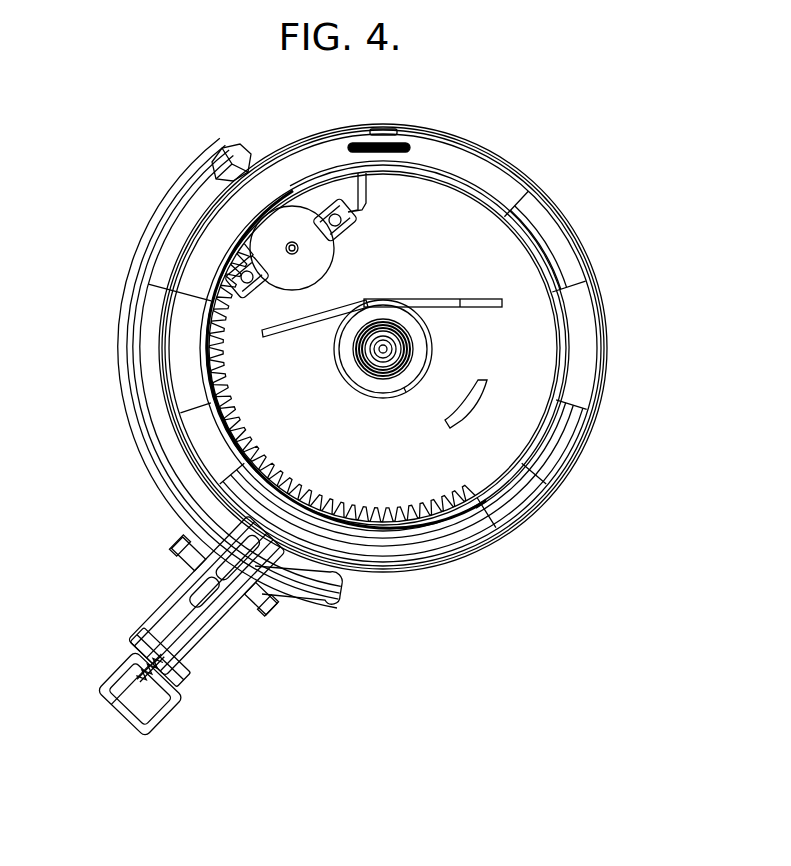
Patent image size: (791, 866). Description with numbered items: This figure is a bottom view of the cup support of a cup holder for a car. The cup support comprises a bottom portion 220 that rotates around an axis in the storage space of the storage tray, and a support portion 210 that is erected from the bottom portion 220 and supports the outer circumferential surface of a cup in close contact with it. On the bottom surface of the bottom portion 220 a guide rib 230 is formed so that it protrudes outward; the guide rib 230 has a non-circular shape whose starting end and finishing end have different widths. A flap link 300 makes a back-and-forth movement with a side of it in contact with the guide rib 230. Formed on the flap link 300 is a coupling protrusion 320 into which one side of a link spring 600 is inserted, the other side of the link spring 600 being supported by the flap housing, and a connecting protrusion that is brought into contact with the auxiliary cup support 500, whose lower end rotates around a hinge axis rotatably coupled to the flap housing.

The support portion 210 is at (147, 352).
The bottom portion 220 is at (493, 243).
The guide rib 230 is at (447, 543).
The flap link 300 is at (235, 625).
The coupling protrusion 320 is at (138, 657).
The auxiliary cup support 500 is at (120, 725).
The link spring 600 is at (175, 700).